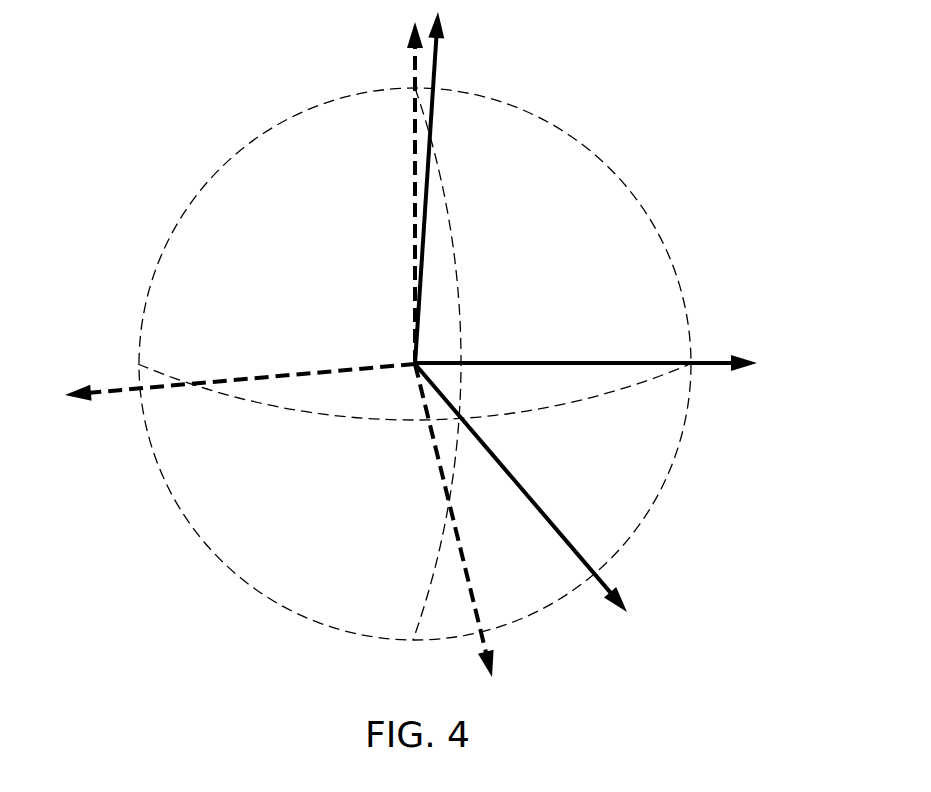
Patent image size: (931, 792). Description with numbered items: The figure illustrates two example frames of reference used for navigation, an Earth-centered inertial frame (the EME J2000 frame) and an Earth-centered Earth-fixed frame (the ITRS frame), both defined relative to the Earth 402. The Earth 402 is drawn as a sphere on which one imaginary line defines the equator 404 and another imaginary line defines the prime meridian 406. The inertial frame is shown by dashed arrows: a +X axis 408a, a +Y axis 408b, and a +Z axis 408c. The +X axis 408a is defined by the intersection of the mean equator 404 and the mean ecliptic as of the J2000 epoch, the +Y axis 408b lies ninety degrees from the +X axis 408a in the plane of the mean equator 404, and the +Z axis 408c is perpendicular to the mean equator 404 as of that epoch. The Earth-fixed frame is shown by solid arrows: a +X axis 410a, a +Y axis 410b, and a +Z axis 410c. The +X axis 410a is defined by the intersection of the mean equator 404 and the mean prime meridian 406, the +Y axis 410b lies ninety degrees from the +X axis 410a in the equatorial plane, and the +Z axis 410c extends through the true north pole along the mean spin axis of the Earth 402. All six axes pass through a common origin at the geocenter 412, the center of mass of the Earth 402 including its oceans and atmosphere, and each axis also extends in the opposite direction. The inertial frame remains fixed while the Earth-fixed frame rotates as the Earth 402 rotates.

The Earth 402 is at (615, 173).
The equator 404 is at (157, 372).
The prime meridian 406 is at (458, 285).
The +X axis 408a is at (285, 373).
The +Y axis 408b is at (440, 470).
The +Z axis 408c is at (413, 182).
The +X axis 410a is at (557, 529).
The +Y axis 410b is at (531, 362).
The +Z axis 410c is at (434, 70).
The geocenter 412 is at (413, 361).